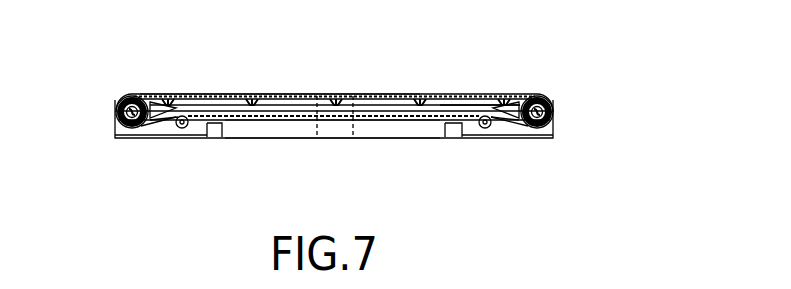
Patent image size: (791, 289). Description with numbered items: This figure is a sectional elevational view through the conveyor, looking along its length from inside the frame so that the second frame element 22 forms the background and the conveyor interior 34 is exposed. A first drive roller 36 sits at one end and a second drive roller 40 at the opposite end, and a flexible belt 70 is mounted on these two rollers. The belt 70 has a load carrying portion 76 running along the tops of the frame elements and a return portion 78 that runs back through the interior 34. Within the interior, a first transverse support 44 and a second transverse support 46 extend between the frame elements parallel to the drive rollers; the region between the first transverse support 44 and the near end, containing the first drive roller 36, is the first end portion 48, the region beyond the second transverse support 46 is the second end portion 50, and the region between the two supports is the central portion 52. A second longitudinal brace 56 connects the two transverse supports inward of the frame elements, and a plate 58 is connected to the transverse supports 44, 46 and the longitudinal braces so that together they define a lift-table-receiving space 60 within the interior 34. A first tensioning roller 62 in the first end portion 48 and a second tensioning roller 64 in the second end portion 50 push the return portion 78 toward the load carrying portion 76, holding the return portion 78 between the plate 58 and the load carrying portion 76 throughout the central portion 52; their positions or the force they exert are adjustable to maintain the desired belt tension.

The second frame element 22 is at (284, 94).
The conveyor interior 34 is at (205, 96).
The first drive roller 36 is at (115, 112).
The second drive roller 40 is at (553, 112).
The first transverse support 44 is at (222, 138).
The second transverse support 46 is at (448, 137).
The first end portion 48 is at (138, 84).
The second end portion 50 is at (545, 85).
The central portion 52 is at (339, 92).
The second longitudinal brace 56 is at (392, 130).
The plate 58 is at (272, 121).
The lift-table-receiving space 60 is at (300, 134).
The first tensioning roller 62 is at (183, 130).
The second tensioning roller 64 is at (487, 128).
The flexible belt 70 is at (407, 95).
The load carrying portion 76 is at (463, 95).
The return portion 78 is at (470, 118).